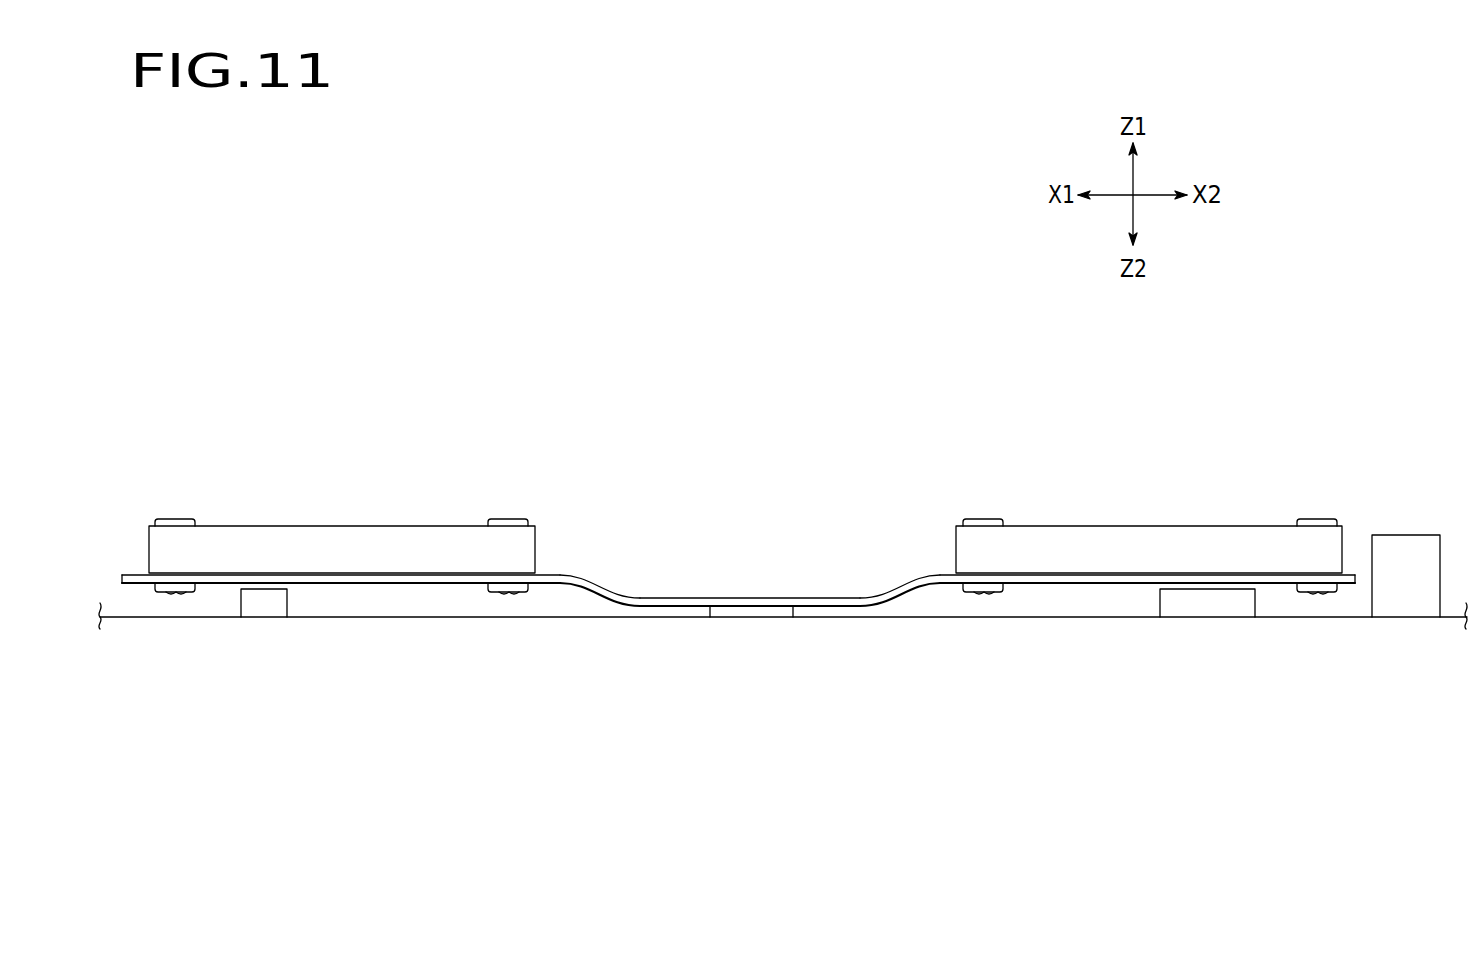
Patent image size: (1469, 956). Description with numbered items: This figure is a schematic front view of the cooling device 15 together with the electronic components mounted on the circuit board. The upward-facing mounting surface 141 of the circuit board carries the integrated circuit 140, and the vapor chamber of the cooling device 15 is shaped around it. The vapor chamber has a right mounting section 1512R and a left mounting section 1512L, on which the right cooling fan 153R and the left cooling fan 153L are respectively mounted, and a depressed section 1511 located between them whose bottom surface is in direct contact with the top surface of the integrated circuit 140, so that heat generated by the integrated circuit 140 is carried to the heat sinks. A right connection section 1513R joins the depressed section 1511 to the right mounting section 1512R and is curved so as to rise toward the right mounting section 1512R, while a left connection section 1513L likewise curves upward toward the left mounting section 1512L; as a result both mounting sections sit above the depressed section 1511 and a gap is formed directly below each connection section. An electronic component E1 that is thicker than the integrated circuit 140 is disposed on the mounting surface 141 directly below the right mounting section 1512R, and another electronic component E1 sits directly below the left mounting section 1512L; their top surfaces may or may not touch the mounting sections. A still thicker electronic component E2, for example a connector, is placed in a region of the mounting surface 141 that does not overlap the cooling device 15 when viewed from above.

The cooling device 15 is at (738, 571).
The depressed section 1511 is at (814, 598).
The right mounting section 1512R is at (425, 583).
The left mounting section 1512L is at (1094, 583).
The right connection section 1513R is at (597, 576).
The left connection section 1513L is at (915, 576).
The right cooling fan 153R is at (292, 535).
The left cooling fan 153L is at (1272, 535).
The integrated circuit 140 is at (750, 609).
The mounting surface 141 is at (1357, 617).
The electronic component E1 is at (287, 598).
The electronic component E2 is at (1403, 535).